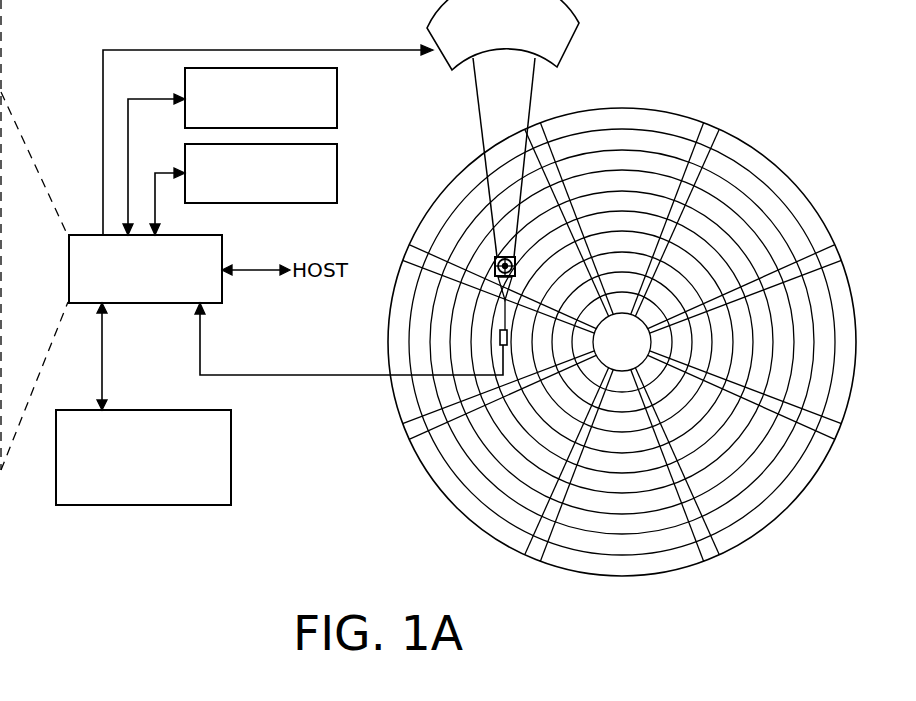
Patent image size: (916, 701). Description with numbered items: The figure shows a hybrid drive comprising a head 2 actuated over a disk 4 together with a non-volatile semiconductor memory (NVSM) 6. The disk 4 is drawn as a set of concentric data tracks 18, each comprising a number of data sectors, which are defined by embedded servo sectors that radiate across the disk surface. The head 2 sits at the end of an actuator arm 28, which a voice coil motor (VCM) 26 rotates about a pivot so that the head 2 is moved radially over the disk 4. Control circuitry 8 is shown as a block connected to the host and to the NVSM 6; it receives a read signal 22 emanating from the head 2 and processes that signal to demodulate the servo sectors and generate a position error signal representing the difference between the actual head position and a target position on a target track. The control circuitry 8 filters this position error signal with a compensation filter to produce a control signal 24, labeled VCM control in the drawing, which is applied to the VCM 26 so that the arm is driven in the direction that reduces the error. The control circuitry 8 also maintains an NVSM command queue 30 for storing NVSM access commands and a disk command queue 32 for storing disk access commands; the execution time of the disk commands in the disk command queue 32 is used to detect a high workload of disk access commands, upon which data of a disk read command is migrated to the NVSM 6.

The head 2 is at (488, 347).
The disk 4 is at (626, 336).
The non-volatile semiconductor memory (NVSM) 6 is at (231, 457).
The control circuitry 8 is at (152, 304).
The data tracks 18 is at (621, 140).
The read signal 22 is at (288, 375).
The control signal 24 is at (102, 100).
The voice coil motor (VCM) 26 is at (443, 52).
The actuator arm 28 is at (486, 143).
The NVSM command queue 30 is at (338, 97).
The disk command queue 32 is at (338, 174).